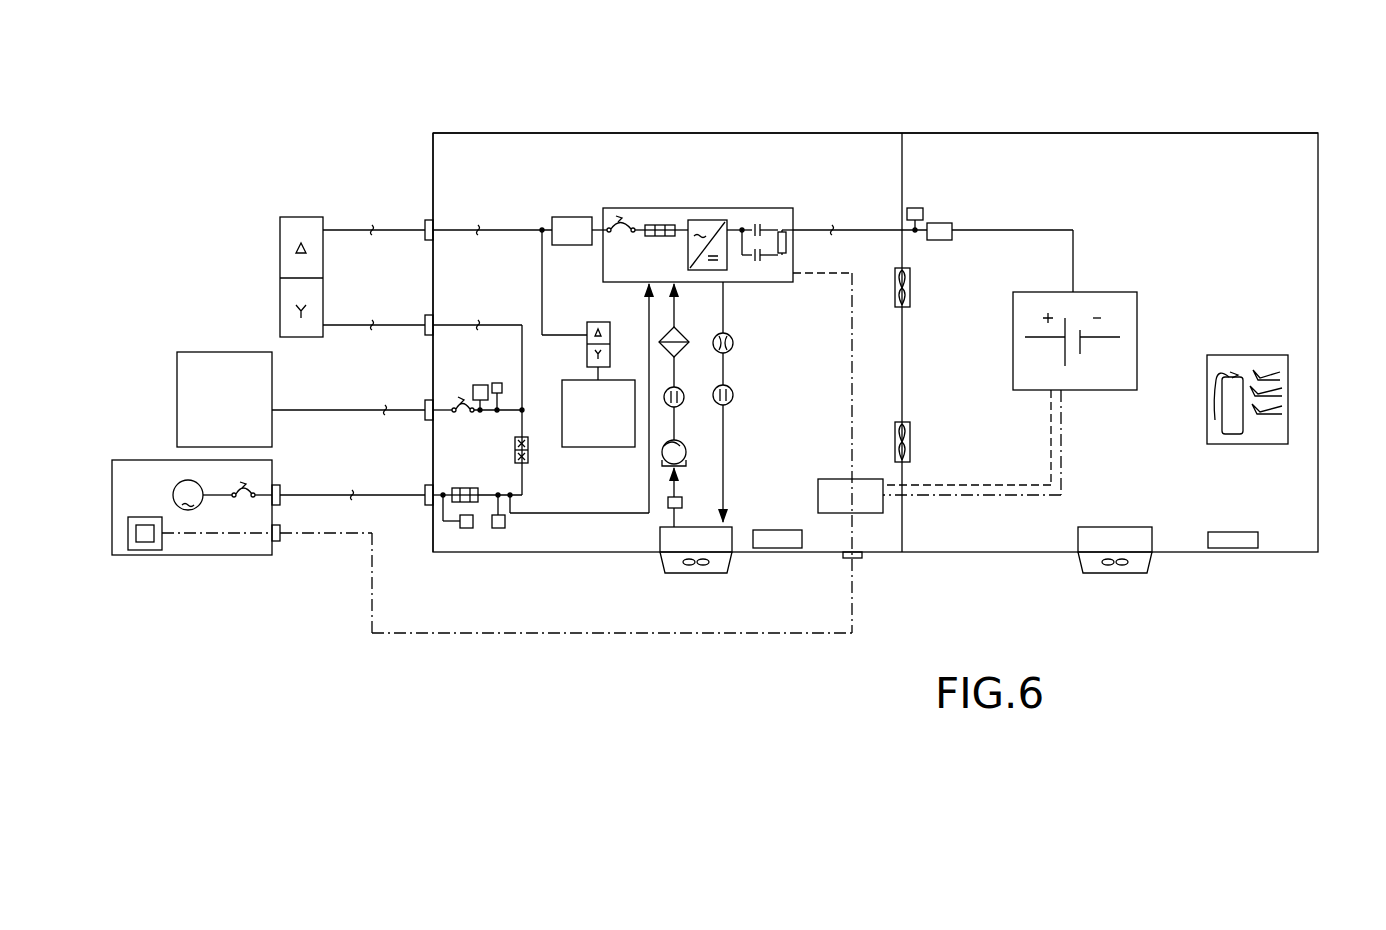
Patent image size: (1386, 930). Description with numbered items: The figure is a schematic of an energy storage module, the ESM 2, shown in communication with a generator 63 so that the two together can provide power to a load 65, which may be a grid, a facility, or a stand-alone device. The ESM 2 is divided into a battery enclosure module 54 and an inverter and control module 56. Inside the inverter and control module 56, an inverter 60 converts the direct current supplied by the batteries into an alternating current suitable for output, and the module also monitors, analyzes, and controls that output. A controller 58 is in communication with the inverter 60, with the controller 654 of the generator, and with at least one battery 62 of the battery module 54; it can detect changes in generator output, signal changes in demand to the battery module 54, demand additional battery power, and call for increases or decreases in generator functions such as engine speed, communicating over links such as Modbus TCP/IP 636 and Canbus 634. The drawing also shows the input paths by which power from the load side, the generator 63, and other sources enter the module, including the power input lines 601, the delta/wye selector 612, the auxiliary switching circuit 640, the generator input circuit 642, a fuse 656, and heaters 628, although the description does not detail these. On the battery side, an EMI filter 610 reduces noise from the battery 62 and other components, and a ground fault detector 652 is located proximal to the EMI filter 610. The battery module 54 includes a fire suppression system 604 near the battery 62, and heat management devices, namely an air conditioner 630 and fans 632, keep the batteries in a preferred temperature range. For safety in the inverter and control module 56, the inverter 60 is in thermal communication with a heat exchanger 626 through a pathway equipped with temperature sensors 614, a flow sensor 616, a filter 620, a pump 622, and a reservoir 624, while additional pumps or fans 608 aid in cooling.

The ESM 2 is at (850, 96).
The battery enclosure module 54 is at (1088, 132).
The inverter and control module 56 is at (663, 131).
The controller 58 is at (815, 478).
The inverter 60 is at (738, 214).
The battery 62 is at (1198, 230).
The generator 63 is at (192, 560).
The load 65 is at (215, 345).
The power input lines 601 is at (372, 226).
The fire suppression system 604 is at (1292, 415).
The pumps/fans 608 is at (597, 467).
The EMI filter 610 is at (570, 217).
The delta/wye voltage selector 612 is at (268, 193).
The temperature sensors 614 is at (681, 390).
The flow sensors 616 is at (730, 338).
The filter 620 is at (680, 336).
The pump 622 is at (681, 441).
The reservoir 624 is at (681, 498).
The heat exchanger 626 is at (694, 576).
The heater 628 is at (760, 530).
The air conditioner 630 is at (1133, 527).
The fan 632 is at (832, 226).
The Canbus 634 is at (852, 375).
The Modbus TCP/IP 636 is at (993, 486).
The auxiliary power switch 640 is at (458, 387).
The generator power input circuit 642 is at (452, 554).
The ground fault detector 652 is at (918, 207).
The controller of the generator 654 is at (150, 520).
The fuse 656 is at (528, 432).